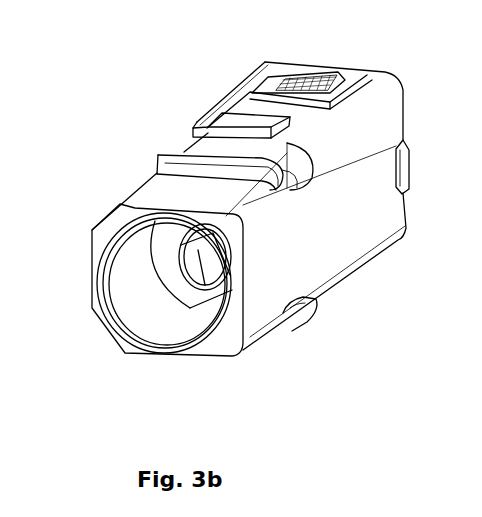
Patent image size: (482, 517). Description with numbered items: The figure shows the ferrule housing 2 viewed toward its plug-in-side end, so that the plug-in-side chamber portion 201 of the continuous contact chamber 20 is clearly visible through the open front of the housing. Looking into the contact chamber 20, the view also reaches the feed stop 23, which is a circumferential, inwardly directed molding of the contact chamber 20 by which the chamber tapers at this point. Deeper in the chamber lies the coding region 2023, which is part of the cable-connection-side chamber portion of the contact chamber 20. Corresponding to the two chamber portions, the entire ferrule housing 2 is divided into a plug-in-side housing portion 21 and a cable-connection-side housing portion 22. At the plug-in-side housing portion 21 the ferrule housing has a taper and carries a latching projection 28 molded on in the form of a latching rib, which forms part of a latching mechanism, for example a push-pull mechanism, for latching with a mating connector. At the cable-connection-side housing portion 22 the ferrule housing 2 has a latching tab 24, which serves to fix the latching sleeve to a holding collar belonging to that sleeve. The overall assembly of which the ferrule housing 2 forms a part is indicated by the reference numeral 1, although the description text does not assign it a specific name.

The plug connector 1 is at (204, 234).
The ferrule housing 2 is at (110, 110).
The contact chamber 20 is at (136, 304).
The plug-in-side chamber portion 201 is at (153, 313).
The plug-in-side housing portion 21 is at (290, 263).
The cable-connection-side housing portion 22 is at (363, 223).
The feed stop 23 is at (186, 285).
The coding region 2023 is at (214, 266).
The latching tab 24 is at (268, 84).
The latching projection 28 is at (175, 157).